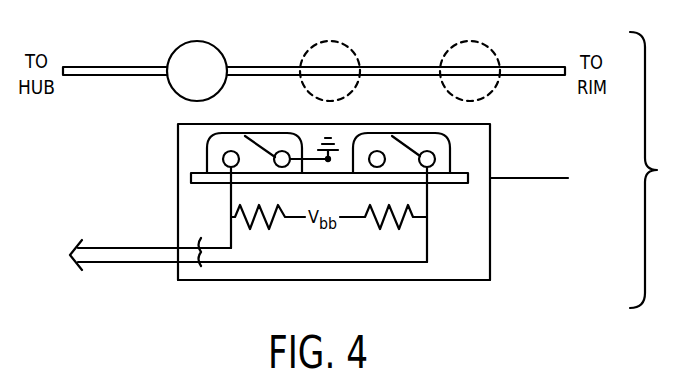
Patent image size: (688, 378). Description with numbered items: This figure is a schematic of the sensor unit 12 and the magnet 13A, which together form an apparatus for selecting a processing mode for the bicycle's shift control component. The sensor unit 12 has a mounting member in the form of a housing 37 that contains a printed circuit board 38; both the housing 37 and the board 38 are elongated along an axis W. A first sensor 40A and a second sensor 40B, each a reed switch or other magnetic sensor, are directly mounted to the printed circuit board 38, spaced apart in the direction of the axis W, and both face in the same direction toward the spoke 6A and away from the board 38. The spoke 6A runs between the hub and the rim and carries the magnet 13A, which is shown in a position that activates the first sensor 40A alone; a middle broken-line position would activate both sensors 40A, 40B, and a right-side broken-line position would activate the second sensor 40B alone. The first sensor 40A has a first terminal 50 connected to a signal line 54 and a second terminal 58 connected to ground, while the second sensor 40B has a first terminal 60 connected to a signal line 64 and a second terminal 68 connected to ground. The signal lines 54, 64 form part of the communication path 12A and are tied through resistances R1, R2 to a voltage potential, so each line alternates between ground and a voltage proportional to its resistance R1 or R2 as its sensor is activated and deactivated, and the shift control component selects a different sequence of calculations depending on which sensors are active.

The spoke 6A is at (133, 66).
The magnet 13A is at (199, 60).
The sensor unit 12 is at (490, 265).
The communication path 12A is at (115, 248).
The housing 37 is at (477, 233).
The printed circuit board 38 is at (191, 180).
The first sensor 40A is at (207, 151).
The second sensor 40B is at (450, 152).
The first terminal 50 is at (231, 151).
The second terminal 58 is at (282, 151).
The second terminal 68 is at (377, 151).
The first terminal 60 is at (427, 151).
The signal line 54 is at (231, 205).
The signal line 64 is at (427, 201).
The axis W is at (543, 181).
The resistance R1 is at (267, 225).
The resistance R2 is at (397, 223).